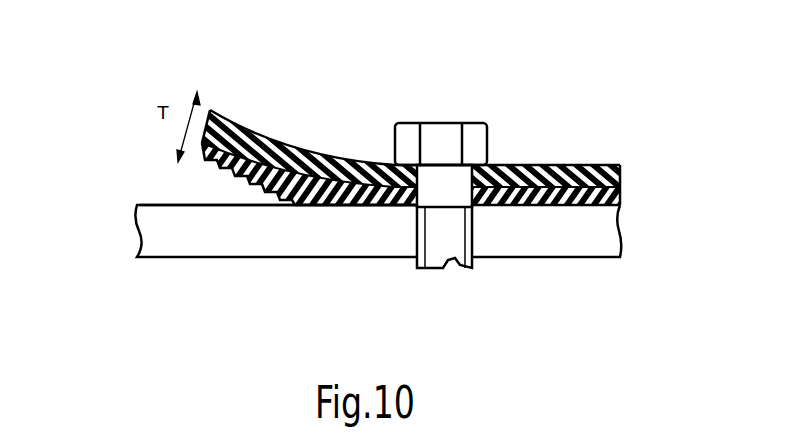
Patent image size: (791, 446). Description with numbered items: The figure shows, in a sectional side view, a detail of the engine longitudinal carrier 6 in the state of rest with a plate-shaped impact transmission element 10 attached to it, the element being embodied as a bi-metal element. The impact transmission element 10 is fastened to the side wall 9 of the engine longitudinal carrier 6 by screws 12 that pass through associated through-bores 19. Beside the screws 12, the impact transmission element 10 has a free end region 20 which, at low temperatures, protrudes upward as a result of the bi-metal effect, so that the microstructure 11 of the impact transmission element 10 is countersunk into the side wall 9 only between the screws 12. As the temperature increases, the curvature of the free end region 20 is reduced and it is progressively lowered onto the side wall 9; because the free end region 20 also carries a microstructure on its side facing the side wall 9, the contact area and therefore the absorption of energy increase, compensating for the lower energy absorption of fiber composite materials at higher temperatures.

The engine longitudinal carrier 6 is at (590, 245).
The side wall 9 is at (245, 206).
The impact transmission element 10 is at (638, 165).
The microstructure 11 is at (223, 175).
The screw 12 is at (450, 245).
The through-bore 19 is at (417, 222).
The free end region 20 is at (343, 139).